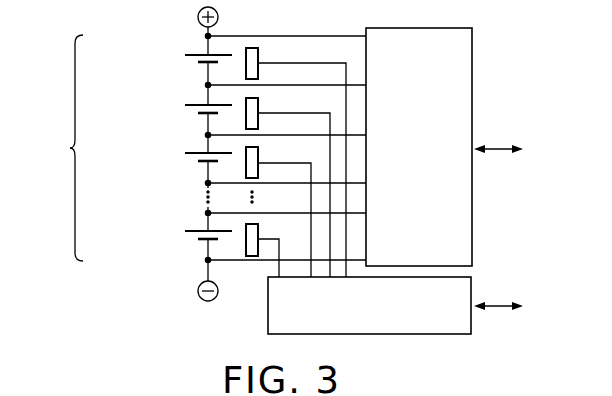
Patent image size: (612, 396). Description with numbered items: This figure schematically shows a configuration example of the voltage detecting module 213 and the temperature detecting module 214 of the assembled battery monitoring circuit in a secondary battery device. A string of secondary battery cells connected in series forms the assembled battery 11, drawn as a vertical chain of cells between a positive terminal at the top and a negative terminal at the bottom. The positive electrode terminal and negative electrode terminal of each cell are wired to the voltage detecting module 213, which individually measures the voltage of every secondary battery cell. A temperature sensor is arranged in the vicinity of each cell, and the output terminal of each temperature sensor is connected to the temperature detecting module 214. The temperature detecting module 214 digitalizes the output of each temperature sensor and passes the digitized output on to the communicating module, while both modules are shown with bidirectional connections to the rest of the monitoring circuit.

The assembled battery 11 is at (62, 148).
The voltage detecting module 213 is at (472, 43).
The temperature detecting module 214 is at (472, 287).